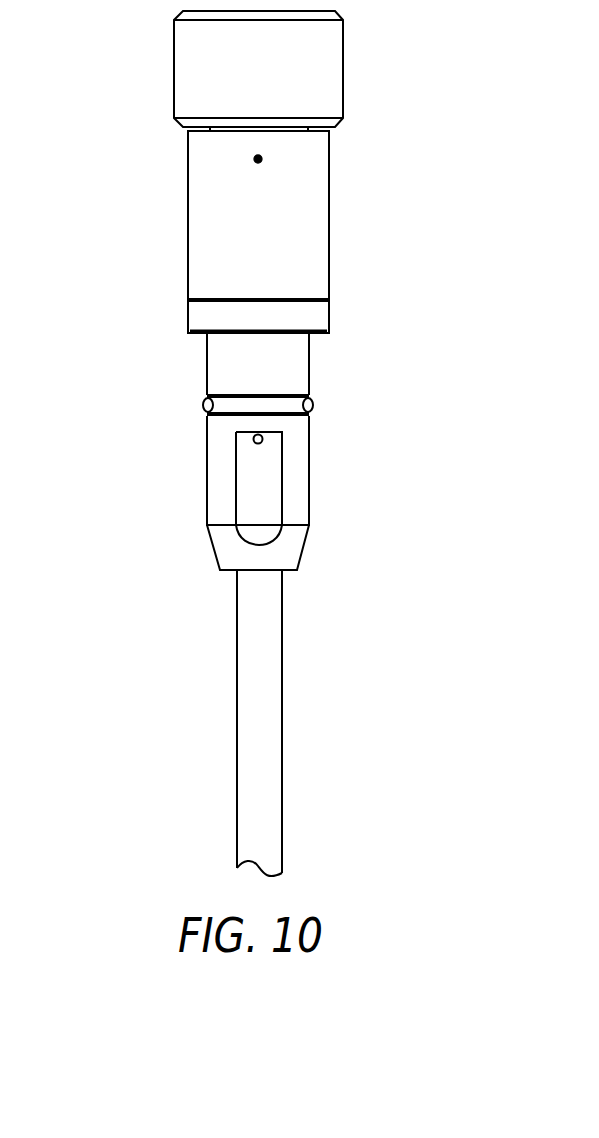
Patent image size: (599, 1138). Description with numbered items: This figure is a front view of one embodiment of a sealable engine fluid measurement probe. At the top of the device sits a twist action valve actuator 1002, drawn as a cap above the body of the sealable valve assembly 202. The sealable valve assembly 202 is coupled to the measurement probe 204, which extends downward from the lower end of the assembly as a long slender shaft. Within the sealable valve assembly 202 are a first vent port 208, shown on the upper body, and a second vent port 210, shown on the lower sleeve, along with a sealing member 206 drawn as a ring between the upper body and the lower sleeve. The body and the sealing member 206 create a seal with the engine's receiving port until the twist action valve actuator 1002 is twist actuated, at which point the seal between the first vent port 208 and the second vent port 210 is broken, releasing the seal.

The twist action valve actuator 1002 is at (343, 53).
The sealable valve assembly 202 is at (110, 323).
The measurement probe 204 is at (282, 720).
The sealing member 206 is at (312, 404).
The first vent port 208 is at (261, 158).
The second vent port 210 is at (263, 438).